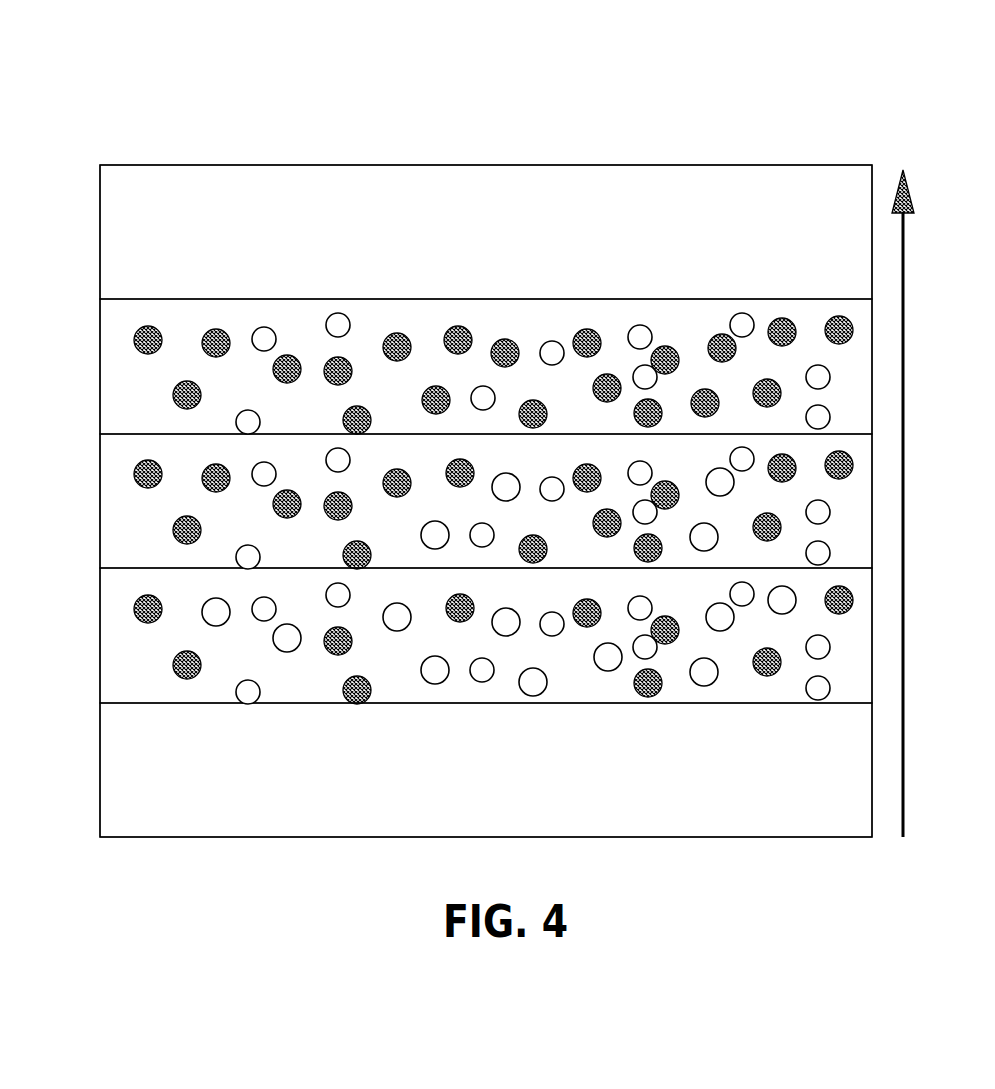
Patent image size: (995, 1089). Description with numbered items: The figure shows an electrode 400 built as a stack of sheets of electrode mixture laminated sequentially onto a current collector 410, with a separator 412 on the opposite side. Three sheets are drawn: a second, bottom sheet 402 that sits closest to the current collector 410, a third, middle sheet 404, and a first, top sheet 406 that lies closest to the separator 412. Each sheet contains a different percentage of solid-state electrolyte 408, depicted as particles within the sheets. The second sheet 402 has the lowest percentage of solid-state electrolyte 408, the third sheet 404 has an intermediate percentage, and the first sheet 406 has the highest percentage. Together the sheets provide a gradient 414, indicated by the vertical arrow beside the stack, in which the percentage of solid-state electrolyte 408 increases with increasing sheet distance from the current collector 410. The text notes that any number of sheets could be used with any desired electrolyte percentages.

The electrode 400 is at (793, 93).
The second sheet 402 is at (100, 653).
The third sheet 404 is at (100, 522).
The first sheet 406 is at (100, 388).
The solid-state electrolyte 408 is at (456, 327).
The current collector 410 is at (100, 785).
The separator 412 is at (100, 274).
The gradient 414 is at (904, 315).